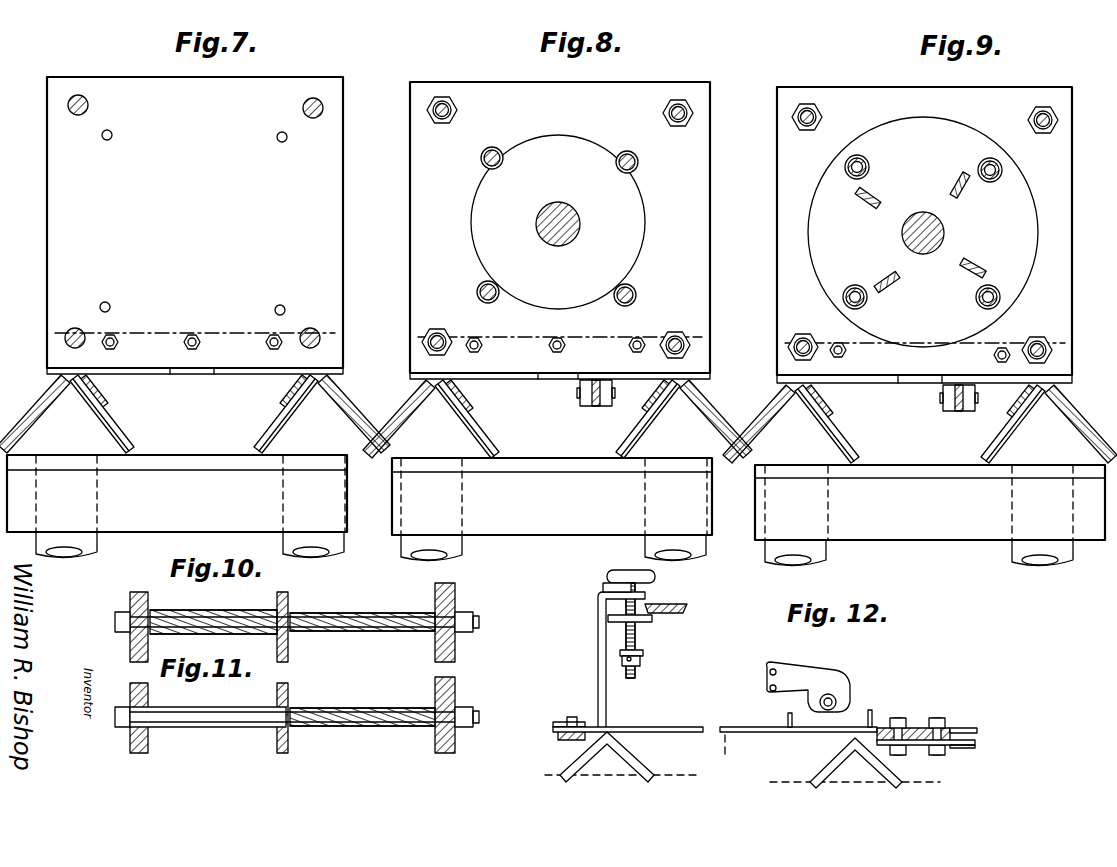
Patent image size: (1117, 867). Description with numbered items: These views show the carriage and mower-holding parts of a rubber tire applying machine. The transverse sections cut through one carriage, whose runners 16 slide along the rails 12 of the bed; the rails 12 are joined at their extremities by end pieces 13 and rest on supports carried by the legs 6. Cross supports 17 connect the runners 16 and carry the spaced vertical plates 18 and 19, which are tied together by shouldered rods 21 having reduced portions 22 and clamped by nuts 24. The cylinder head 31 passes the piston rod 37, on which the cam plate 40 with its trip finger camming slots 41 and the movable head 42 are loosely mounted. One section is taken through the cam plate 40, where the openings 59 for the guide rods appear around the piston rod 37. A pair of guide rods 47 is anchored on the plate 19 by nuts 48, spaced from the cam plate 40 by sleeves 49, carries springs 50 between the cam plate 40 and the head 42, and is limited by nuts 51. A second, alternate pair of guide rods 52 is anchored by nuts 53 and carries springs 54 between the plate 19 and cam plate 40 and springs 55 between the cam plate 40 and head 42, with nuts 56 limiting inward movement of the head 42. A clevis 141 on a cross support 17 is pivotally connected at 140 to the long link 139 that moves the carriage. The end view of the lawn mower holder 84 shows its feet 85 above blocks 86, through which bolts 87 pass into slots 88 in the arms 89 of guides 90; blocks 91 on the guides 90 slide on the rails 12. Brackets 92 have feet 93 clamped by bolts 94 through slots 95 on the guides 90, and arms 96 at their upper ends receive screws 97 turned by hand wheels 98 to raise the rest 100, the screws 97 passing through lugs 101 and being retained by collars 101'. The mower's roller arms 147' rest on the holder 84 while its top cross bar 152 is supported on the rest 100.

In FIG. 7, the legs 6 is at (98, 551).
In FIG. 8, the legs 6 is at (462, 549).
In FIG. 9, the legs 6 is at (830, 553).
In FIG. 7, the rails 12 is at (120, 440).
In FIG. 8, the rails 12 is at (485, 440).
In FIG. 9, the rails 12 is at (842, 440).
In FIG. 12, the rails 12 is at (634, 752).
In FIG. 7, the end pieces 13 is at (188, 518).
In FIG. 8, the end pieces 13 is at (550, 518).
In FIG. 9, the end pieces 13 is at (919, 518).
In FIG. 7, the runners 16 is at (82, 400).
In FIG. 8, the runners 16 is at (456, 403).
In FIG. 9, the runners 16 is at (818, 406).
In FIG. 7, the cross supports 17 is at (56, 358).
In FIG. 8, the cross supports 17 is at (508, 350).
In FIG. 9, the cross supports 17 is at (924, 379).
In FIG. 7, the plate 18 is at (52, 147).
In FIG. 8, the plate 19 is at (467, 88).
In FIG. 9, the plate 19 is at (850, 94).
In FIG. 10, the plate 19 is at (130, 600).
In FIG. 11, the plate 19 is at (132, 692).
In FIG. 7, the rods 21 is at (80, 95).
In FIG. 7, the reduced portions 22 is at (192, 342).
In FIG. 8, the reduced portions 22 is at (683, 100).
In FIG. 9, the reduced portions 22 is at (822, 118).
In FIG. 8, the nuts 24 is at (458, 110).
In FIG. 9, the nuts 24 is at (805, 133).
In FIG. 8, the head 31 is at (646, 222).
In FIG. 8, the piston rod 37 is at (570, 210).
In FIG. 9, the piston rod 37 is at (922, 212).
In FIG. 9, the cam plate 40 is at (812, 206).
In FIG. 10, the cam plate 40 is at (288, 644).
In FIG. 11, the cam plate 40 is at (288, 690).
In FIG. 9, the trip finger camming slots 41 is at (866, 190).
In FIG. 10, the head 42 is at (450, 590).
In FIG. 11, the head 42 is at (438, 688).
In FIG. 8, the guide rods 47 is at (637, 159).
In FIG. 9, the guide rods 47 is at (991, 182).
In FIG. 11, the guide rods 47 is at (352, 708).
In FIG. 11, the nuts 48 is at (120, 728).
In FIG. 8, the sleeves 49 is at (637, 166).
In FIG. 11, the sleeves 49 is at (214, 728).
In FIG. 9, the springs 50 is at (985, 158).
In FIG. 11, the springs 50 is at (305, 728).
In FIG. 11, the nuts 51 is at (468, 728).
In FIG. 8, the guide rods 52 is at (502, 160).
In FIG. 9, the guide rods 52 is at (985, 310).
In FIG. 10, the guide rods 52 is at (370, 613).
In FIG. 10, the nuts 53 is at (120, 632).
In FIG. 8, the springs 54 is at (492, 148).
In FIG. 10, the springs 54 is at (205, 610).
In FIG. 9, the springs 55 is at (976, 297).
In FIG. 10, the springs 55 is at (315, 612).
In FIG. 10, the nuts 56 is at (470, 618).
In FIG. 9, the slot 59 is at (872, 206).
In FIG. 12, the lawn mower holder 84 is at (870, 710).
In FIG. 12, the feet 85 is at (888, 727).
In FIG. 12, the blocks 86 is at (978, 731).
In FIG. 12, the bolts 87 is at (905, 718).
In FIG. 12, the slots 88 is at (921, 746).
In FIG. 12, the arms 89 is at (968, 748).
In FIG. 12, the guides 90 is at (690, 733).
In FIG. 12, the blocks 91 is at (622, 732).
In FIG. 12, the lawn mower holding brackets 92 is at (600, 698).
In FIG. 12, the feet 93 is at (556, 724).
In FIG. 12, the bolts 94 is at (571, 716).
In FIG. 12, the slots 95 is at (560, 738).
In FIG. 12, the arms 96 is at (642, 592).
In FIG. 12, the screws 97 is at (610, 582).
In FIG. 12, the hand operated wheels 98 is at (625, 570).
In FIG. 12, the rest 100 is at (610, 617).
In FIG. 12, the lugs 101 is at (658, 645).
In FIG. 12, the collars 101' is at (658, 666).
In FIG. 8, the long link 139 is at (594, 406).
In FIG. 9, the long link 139 is at (958, 412).
In FIG. 8, the pivotal connection 140 is at (578, 394).
In FIG. 9, the pivotal connection 140 is at (941, 398).
In FIG. 8, the clevis 141 is at (590, 404).
In FIG. 9, the clevis 141 is at (952, 410).
In FIG. 12, the roller arms 147' is at (823, 678).
In FIG. 12, the top cross bar 152 is at (687, 606).